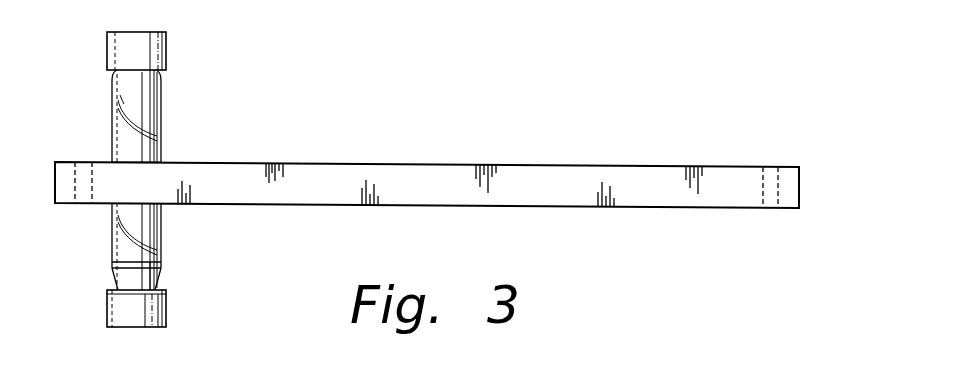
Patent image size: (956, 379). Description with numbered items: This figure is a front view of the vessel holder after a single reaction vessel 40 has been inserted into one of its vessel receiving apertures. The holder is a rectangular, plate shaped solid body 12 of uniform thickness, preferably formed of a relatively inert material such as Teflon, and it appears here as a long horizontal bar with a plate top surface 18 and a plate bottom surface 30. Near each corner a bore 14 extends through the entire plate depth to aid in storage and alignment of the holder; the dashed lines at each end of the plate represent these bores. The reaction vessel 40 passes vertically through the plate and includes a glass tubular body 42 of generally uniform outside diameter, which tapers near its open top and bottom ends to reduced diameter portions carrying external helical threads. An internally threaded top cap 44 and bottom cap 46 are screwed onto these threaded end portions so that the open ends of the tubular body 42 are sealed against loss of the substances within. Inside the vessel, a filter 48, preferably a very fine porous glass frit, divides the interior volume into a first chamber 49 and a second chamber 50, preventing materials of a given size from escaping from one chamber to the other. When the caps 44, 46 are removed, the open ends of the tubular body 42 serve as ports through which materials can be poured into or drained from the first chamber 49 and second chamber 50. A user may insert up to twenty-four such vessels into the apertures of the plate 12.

The plate shaped solid body 12 is at (55, 179).
The bore 14 is at (95, 163).
The plate top surface 18 is at (443, 162).
The plate bottom surface 30 is at (233, 205).
The reaction vessel 40 is at (155, 189).
The tubular body 42 is at (160, 148).
The top cap 44 is at (110, 50).
The bottom cap 46 is at (134, 327).
The filter 48 is at (112, 263).
The first chamber 49 is at (163, 108).
The second chamber 50 is at (158, 281).